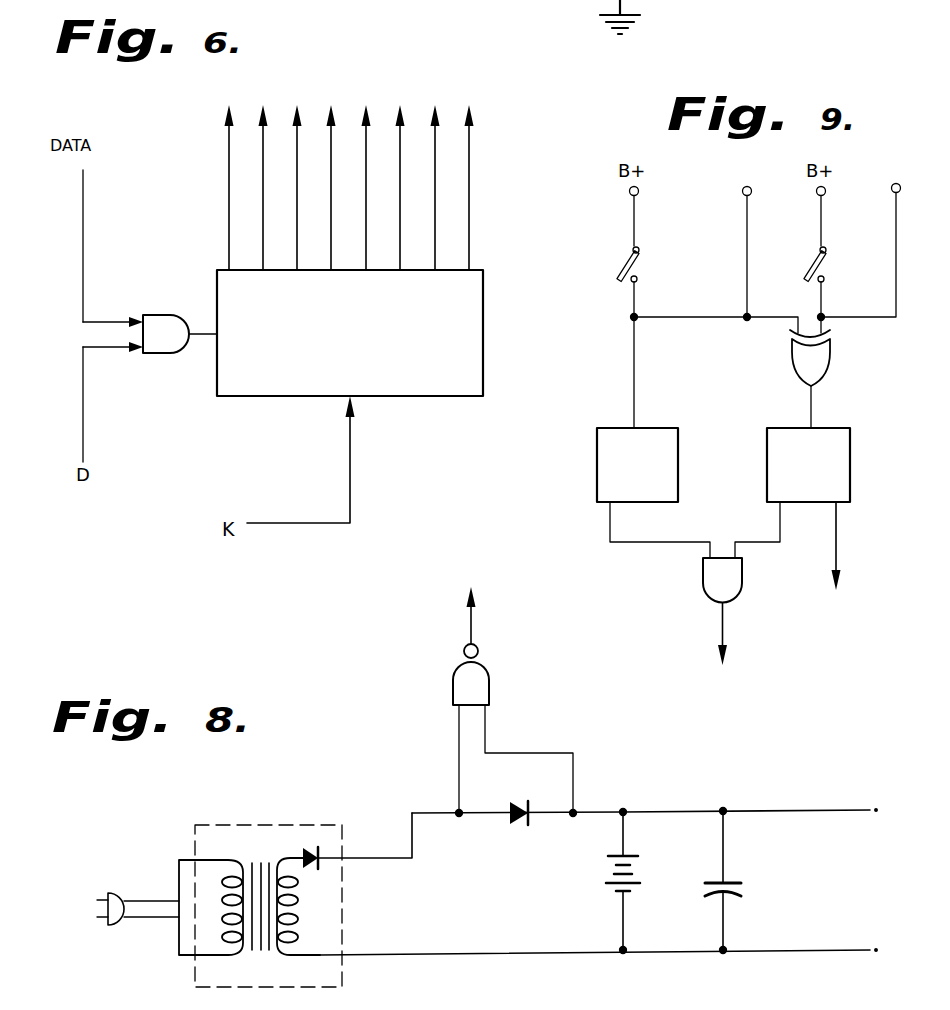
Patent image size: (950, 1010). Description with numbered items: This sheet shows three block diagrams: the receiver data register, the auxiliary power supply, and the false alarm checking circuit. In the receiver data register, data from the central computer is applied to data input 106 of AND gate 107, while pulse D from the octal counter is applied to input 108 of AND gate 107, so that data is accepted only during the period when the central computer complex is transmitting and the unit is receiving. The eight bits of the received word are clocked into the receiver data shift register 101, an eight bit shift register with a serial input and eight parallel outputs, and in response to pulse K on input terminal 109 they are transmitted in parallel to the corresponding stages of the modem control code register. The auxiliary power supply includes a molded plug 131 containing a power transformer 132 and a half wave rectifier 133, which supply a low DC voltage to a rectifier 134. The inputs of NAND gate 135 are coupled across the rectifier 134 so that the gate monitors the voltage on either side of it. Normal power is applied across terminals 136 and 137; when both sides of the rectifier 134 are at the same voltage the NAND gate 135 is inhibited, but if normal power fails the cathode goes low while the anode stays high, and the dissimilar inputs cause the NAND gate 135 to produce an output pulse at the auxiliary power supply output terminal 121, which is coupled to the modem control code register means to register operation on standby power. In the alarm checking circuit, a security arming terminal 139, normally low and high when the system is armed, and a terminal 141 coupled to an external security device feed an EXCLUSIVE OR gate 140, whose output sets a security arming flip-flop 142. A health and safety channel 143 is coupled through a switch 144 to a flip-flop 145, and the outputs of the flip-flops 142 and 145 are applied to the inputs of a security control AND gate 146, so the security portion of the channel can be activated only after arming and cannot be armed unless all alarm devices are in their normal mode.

In FIG. 6, the receiver data shift register 101 is at (437, 397).
In FIG. 6, the data input 106 is at (83, 225).
In FIG. 6, the AND gate 107 is at (159, 315).
In FIG. 6, the input 108 is at (83, 400).
In FIG. 6, the input terminal 109 is at (300, 523).
In FIG. 9, the security arming terminal 139 is at (896, 184).
In FIG. 9, the EXCLUSIVE OR gate 140 is at (830, 366).
In FIG. 9, the terminal 141 is at (747, 195).
In FIG. 9, the security arming flip-flop 142 is at (850, 462).
In FIG. 9, the health and safety channel 143 is at (634, 208).
In FIG. 9, the switch 144 is at (622, 270).
In FIG. 9, the flip-flop 145 is at (676, 428).
In FIG. 9, the security control AND gate 146 is at (703, 590).
In FIG. 8, the auxiliary power supply output terminal 121 is at (471, 625).
In FIG. 8, the molded plug 131 is at (318, 825).
In FIG. 8, the power transformer 132 is at (246, 860).
In FIG. 8, the half wave rectifier 133 is at (307, 868).
In FIG. 8, the rectifier 134 is at (521, 826).
In FIG. 8, the NAND gate 135 is at (489, 686).
In FIG. 8, the terminal 136 is at (800, 810).
In FIG. 8, the terminal 137 is at (805, 950).